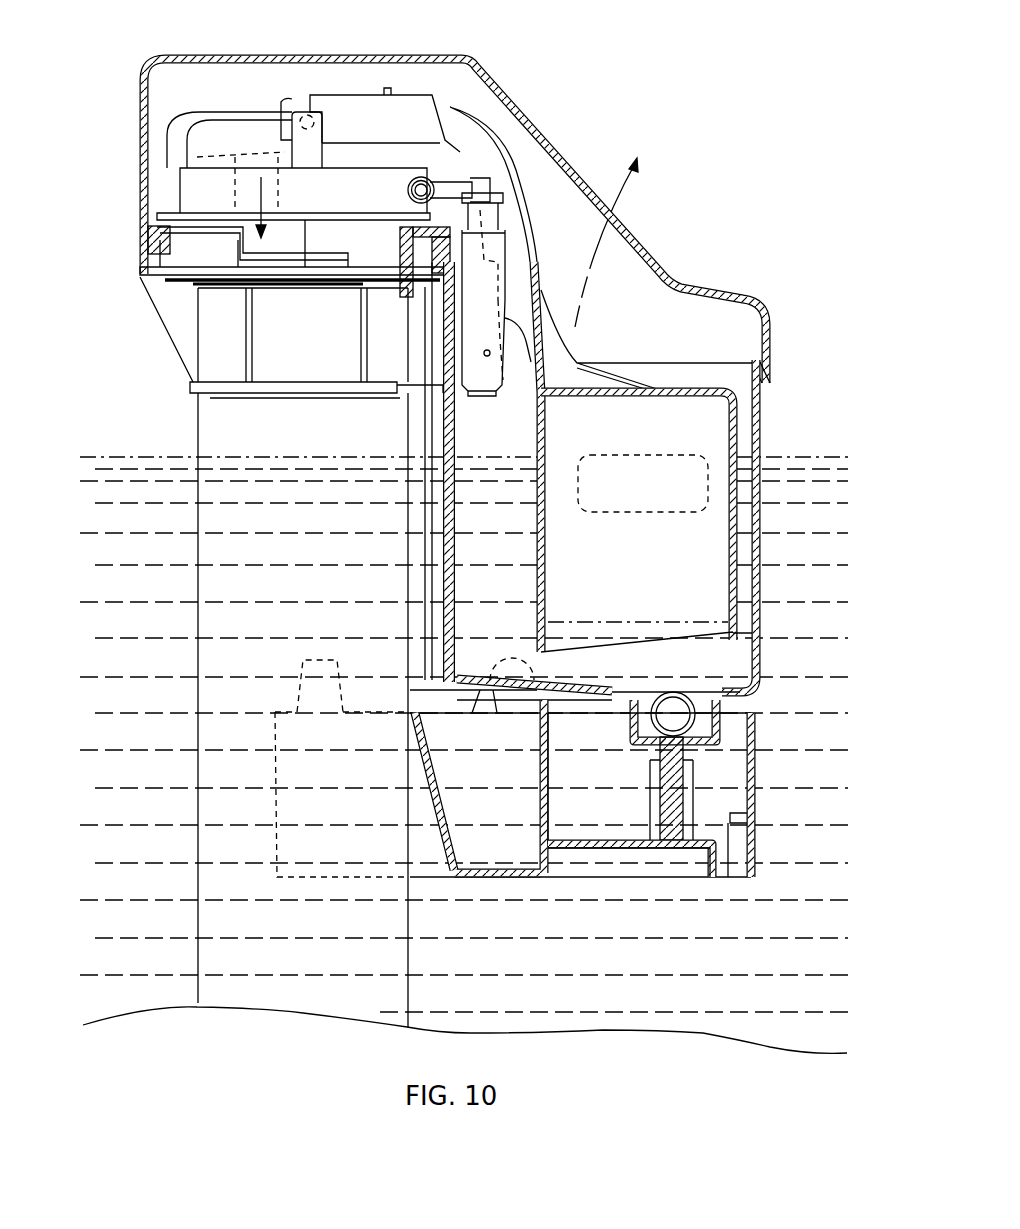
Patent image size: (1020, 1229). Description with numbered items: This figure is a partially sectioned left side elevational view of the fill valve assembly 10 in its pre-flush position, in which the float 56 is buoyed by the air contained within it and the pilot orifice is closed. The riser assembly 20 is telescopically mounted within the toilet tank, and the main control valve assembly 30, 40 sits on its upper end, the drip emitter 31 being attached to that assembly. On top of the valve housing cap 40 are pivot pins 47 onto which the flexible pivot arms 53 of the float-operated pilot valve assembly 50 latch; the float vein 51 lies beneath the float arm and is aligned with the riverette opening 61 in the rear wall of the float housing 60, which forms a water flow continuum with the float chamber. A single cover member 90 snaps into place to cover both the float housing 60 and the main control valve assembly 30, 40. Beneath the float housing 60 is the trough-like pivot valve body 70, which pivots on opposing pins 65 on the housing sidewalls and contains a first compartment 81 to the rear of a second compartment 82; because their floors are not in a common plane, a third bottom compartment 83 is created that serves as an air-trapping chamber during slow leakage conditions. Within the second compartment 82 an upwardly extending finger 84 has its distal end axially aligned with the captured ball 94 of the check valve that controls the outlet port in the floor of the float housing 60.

The fill valve assembly 10 is at (644, 56).
The riser assembly 20 is at (200, 425).
The main control valve assembly 30 is at (200, 243).
The drip emitter 31 is at (500, 352).
The valve housing cap 40 is at (190, 190).
The pivot pins 47 is at (305, 115).
The float-operated pilot valve assembly 50 is at (507, 216).
The float vein 51 is at (465, 172).
The flexible pivot arms 53 is at (356, 112).
The float 56 is at (735, 412).
The float housing 60 is at (757, 443).
The riverette opening 61 is at (447, 238).
The pins 65 is at (512, 665).
The pivot valve body 70 is at (752, 778).
The first compartment 81 is at (508, 810).
The second compartment 82 is at (610, 783).
The third bottom compartment 83 is at (700, 868).
The finger 84 is at (672, 791).
The cover member 90 is at (742, 297).
The ball 94 is at (678, 714).